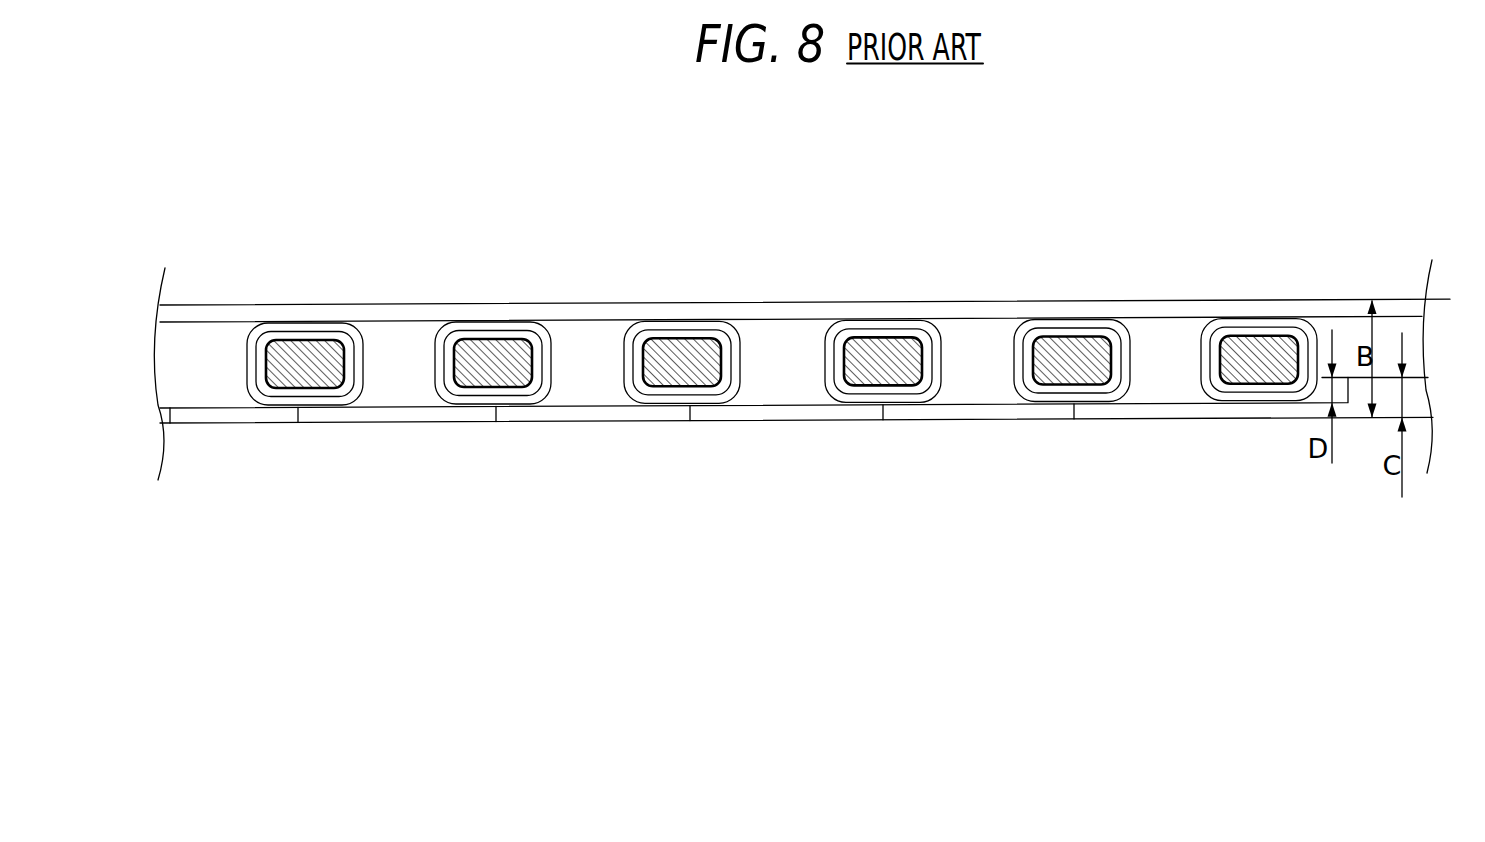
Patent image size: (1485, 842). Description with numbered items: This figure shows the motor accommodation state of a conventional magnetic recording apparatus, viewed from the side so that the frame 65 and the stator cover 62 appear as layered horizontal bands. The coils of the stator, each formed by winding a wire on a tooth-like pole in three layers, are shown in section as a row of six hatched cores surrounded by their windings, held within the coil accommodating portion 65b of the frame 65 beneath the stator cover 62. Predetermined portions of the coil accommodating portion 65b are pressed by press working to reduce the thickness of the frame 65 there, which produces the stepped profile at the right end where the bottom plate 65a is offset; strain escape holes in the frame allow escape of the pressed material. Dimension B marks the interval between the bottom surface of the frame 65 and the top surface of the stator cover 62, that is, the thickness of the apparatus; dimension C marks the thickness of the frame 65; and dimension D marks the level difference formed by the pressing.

The stator cover 62 is at (1124, 298).
The frame 65 is at (1145, 418).
The bottom plate 65a is at (1407, 378).
The coil accommodating portion 65b is at (1190, 388).